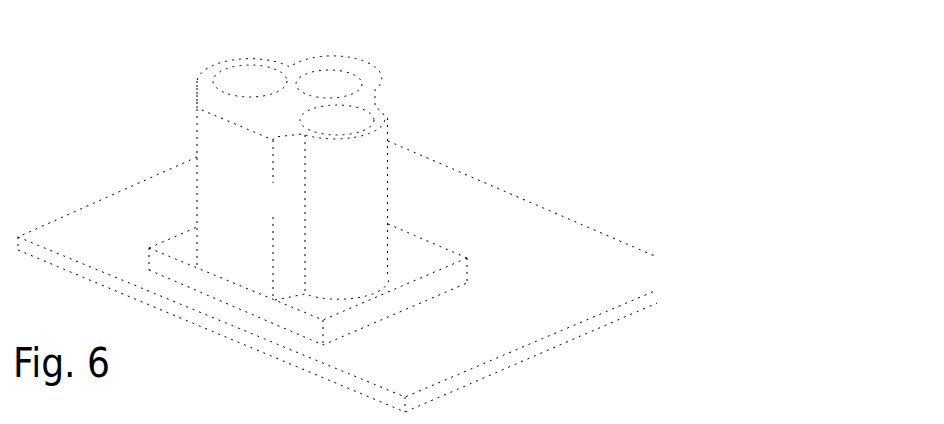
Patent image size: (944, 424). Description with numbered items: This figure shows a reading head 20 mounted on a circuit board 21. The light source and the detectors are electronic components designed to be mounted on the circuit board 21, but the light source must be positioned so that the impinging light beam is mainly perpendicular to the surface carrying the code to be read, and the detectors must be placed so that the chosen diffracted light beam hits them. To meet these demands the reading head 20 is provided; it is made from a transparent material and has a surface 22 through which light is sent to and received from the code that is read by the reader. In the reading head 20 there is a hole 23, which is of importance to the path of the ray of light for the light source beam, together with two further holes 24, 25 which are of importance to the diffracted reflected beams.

The reading head 20 is at (403, 100).
The circuit board 21 is at (493, 192).
The surface 22 is at (227, 173).
The hole 23 is at (327, 77).
The hole 24 is at (245, 77).
The hole 25 is at (342, 113).